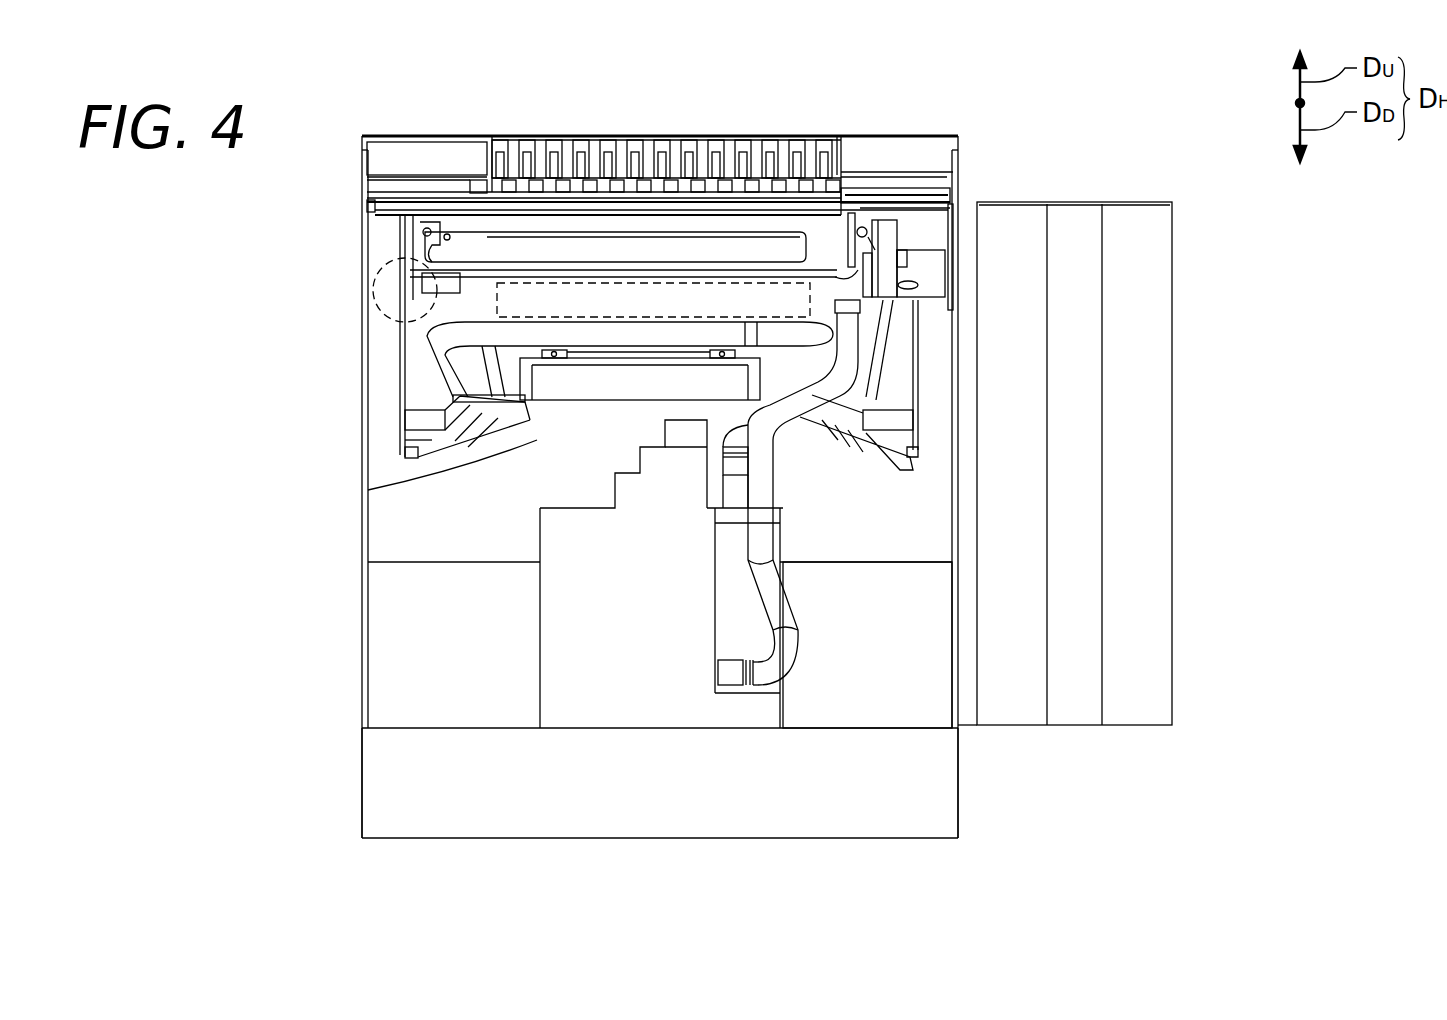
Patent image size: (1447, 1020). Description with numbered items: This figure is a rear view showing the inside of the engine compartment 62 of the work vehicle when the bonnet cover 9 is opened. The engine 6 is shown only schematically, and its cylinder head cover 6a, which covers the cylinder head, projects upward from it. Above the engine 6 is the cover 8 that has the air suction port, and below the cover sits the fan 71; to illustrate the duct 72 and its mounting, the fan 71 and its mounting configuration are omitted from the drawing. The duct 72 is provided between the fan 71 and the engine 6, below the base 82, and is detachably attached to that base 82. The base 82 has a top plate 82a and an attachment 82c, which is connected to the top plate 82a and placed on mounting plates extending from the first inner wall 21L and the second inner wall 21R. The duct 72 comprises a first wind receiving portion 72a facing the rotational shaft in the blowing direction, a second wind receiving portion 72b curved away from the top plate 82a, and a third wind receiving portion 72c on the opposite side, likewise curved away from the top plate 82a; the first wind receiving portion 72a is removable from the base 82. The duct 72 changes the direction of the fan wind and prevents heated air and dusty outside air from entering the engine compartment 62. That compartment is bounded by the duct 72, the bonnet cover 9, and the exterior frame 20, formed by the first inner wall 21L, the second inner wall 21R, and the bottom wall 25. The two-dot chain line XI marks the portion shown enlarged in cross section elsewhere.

The engine 6 is at (602, 574).
The cylinder head cover 6a is at (688, 436).
The cover 8 is at (877, 158).
The bonnet cover 9 is at (1133, 218).
The exterior frame 20 is at (656, 806).
The second inner wall 21R is at (362, 728).
The first inner wall 21L is at (958, 736).
The bottom wall 25 is at (651, 817).
The engine compartment 62 is at (875, 530).
The fan 71 is at (575, 285).
The duct 72 is at (727, 492).
The first wind receiving portion 72a is at (640, 380).
The second wind receiving portion 72b is at (458, 360).
The third wind receiving portion 72c is at (867, 332).
The base 82 is at (1083, 276).
The top plate 82a is at (893, 300).
The attachment 82c is at (938, 265).
The section indicator XI is at (380, 272).